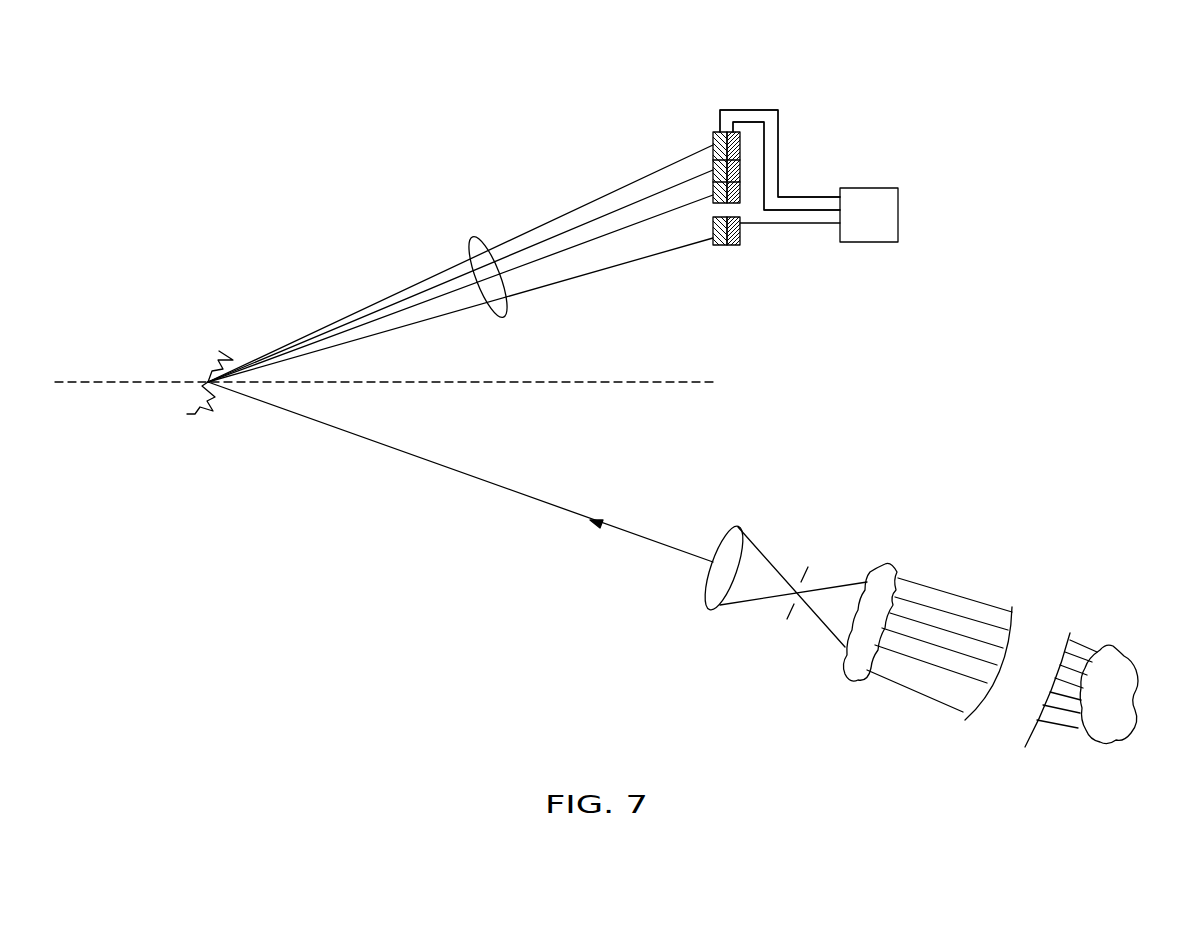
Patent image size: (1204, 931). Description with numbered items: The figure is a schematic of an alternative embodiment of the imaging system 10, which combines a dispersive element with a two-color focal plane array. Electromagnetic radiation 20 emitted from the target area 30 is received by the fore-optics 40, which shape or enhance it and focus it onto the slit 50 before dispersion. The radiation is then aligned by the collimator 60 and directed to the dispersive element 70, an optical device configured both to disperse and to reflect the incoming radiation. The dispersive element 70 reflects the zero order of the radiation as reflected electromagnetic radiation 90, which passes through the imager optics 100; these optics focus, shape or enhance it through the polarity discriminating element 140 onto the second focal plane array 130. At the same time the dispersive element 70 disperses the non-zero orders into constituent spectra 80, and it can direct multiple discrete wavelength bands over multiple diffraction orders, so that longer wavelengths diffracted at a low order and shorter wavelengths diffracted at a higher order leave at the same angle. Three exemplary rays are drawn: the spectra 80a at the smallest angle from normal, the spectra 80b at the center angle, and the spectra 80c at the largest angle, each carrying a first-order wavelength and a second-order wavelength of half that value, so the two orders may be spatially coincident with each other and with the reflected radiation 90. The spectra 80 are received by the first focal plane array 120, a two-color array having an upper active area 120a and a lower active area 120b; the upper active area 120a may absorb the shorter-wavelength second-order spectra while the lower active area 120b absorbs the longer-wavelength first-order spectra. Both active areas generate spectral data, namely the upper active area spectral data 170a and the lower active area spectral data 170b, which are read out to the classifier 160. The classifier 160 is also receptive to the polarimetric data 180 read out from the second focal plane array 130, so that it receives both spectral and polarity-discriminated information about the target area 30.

The imaging system 10 is at (938, 100).
The electromagnetic radiation 20 is at (400, 457).
The target area 30 is at (1138, 689).
The fore-optics 40 is at (843, 662).
The slit 50 is at (783, 607).
The collimator 60 is at (708, 598).
The dispersive element 70 is at (221, 355).
The spectra 80 is at (460, 263).
The spectra at smallest angle 80a is at (410, 306).
The spectra at center angle 80b is at (430, 289).
The spectra at largest angle 80c is at (455, 265).
The reflected electromagnetic radiation 90 is at (438, 317).
The imager optics 100 is at (474, 237).
The first focal plane array 120 is at (761, 129).
The upper active area 120a is at (718, 130).
The lower active area 120b is at (737, 130).
The second focal plane array 130 is at (735, 247).
The polarity discriminating element 140 is at (720, 247).
The classifier 160 is at (900, 215).
The upper active area spectral data 170a is at (789, 196).
The lower active area spectral data 170b is at (818, 208).
The polarimetric data 180 is at (795, 226).